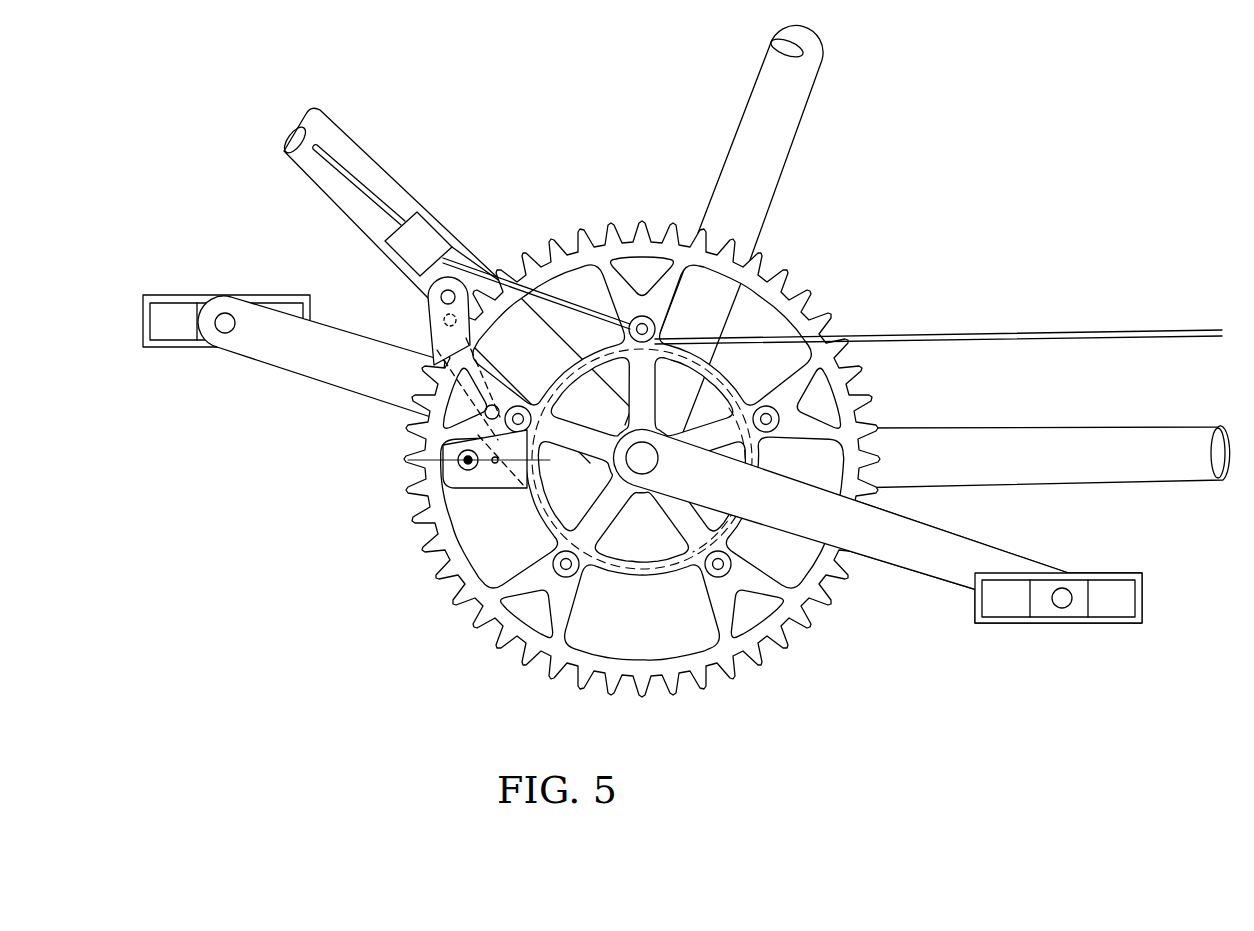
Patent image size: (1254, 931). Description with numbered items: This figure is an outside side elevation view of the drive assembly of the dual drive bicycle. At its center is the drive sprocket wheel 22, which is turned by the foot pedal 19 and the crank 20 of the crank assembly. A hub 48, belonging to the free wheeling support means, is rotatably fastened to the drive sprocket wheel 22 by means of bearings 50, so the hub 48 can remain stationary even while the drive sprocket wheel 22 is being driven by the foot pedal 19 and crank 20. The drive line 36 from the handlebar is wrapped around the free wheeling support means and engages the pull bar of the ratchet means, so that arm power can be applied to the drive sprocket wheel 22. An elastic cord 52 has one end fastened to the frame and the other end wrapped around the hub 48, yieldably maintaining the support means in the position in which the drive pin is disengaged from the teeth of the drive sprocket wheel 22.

The foot pedal 19 is at (180, 296).
The crank 20 is at (317, 355).
The drive sprocket wheel 22 is at (542, 643).
The drive line 36 is at (345, 175).
The hub 48 is at (655, 560).
The bearings 50 is at (770, 406).
The elastic cord 52 is at (1073, 332).